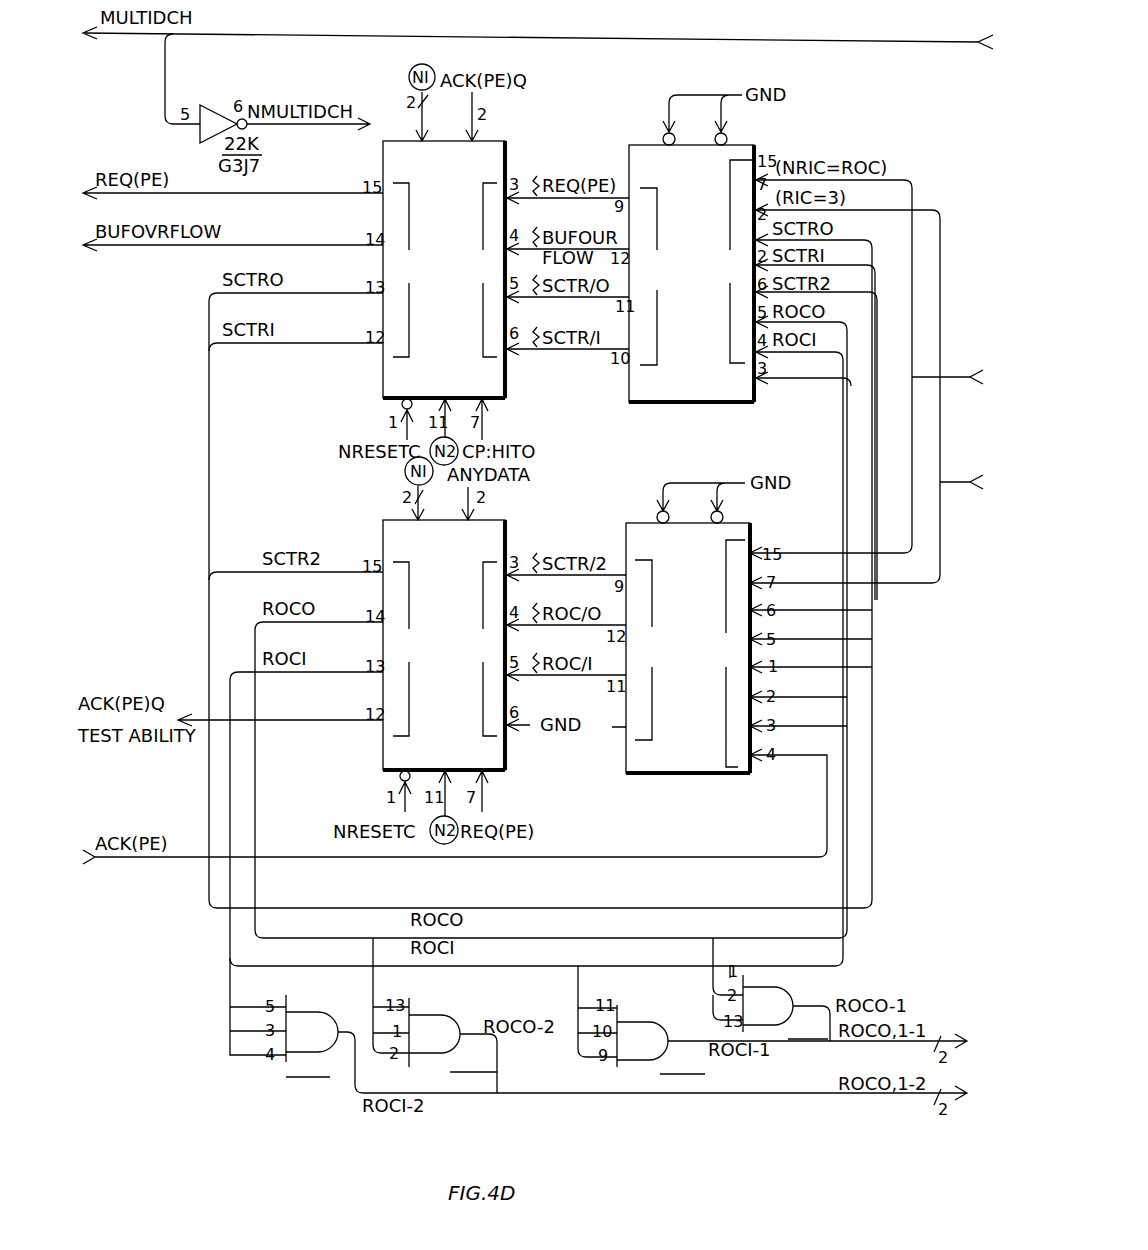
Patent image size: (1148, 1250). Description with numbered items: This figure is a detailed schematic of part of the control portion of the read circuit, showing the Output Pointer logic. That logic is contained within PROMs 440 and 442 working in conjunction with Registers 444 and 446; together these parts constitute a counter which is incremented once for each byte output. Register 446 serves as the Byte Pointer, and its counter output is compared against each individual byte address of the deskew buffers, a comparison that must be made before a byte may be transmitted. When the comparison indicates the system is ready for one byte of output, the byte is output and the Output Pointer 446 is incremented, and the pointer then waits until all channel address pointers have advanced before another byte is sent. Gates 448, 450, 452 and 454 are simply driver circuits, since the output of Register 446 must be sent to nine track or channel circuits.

The PROM 440 is at (756, 150).
The PROM 442 is at (750, 527).
The register 444 is at (508, 143).
The register 446 is at (508, 525).
The gate 448 is at (302, 1012).
The gate 450 is at (432, 1014).
The gate 452 is at (634, 1020).
The gate 454 is at (800, 986).